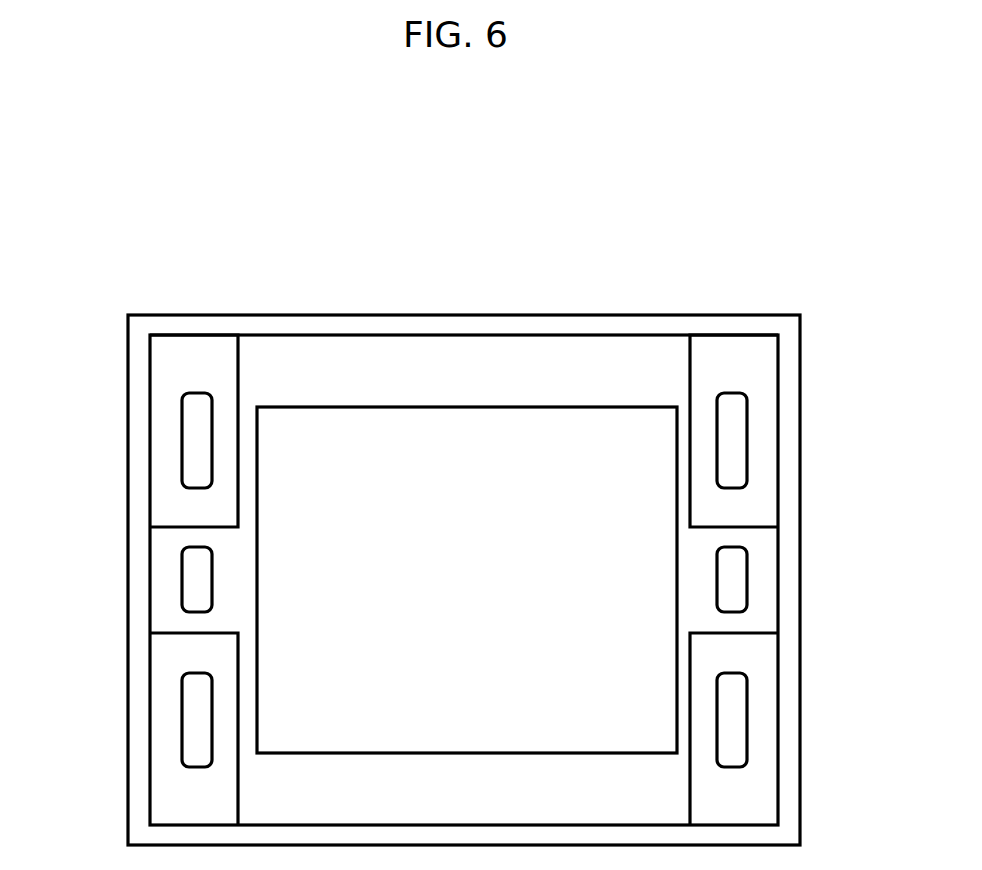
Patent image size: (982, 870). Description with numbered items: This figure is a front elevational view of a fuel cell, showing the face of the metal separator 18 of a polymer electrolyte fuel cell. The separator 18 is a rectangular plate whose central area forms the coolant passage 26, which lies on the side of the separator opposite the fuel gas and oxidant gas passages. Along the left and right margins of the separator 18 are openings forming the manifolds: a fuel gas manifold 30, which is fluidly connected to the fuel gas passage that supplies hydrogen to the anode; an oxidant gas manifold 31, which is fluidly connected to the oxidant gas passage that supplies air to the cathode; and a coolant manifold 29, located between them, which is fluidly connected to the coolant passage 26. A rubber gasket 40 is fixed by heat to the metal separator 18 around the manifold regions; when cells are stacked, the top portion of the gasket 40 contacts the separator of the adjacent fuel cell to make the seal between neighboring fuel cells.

The separator 18 is at (578, 315).
The coolant passage 26 is at (408, 436).
The coolant manifold 29 is at (197, 583).
The fuel gas manifold 30 is at (197, 445).
The oxidant gas manifold 31 is at (735, 437).
The rubber gasket 40 is at (238, 335).